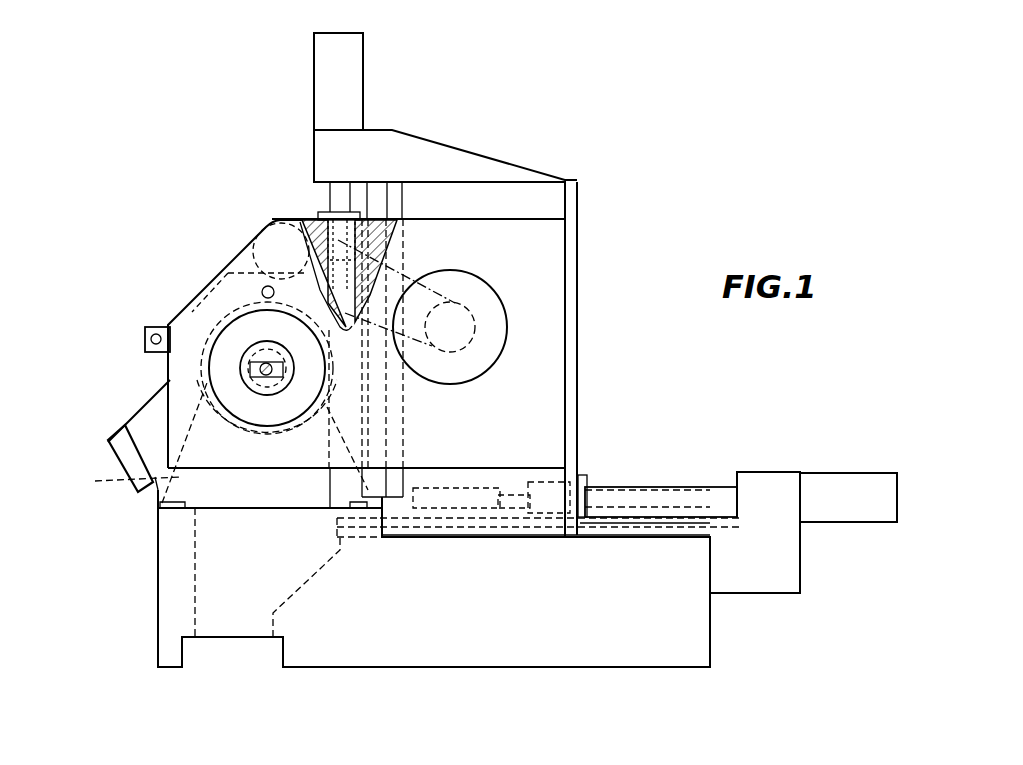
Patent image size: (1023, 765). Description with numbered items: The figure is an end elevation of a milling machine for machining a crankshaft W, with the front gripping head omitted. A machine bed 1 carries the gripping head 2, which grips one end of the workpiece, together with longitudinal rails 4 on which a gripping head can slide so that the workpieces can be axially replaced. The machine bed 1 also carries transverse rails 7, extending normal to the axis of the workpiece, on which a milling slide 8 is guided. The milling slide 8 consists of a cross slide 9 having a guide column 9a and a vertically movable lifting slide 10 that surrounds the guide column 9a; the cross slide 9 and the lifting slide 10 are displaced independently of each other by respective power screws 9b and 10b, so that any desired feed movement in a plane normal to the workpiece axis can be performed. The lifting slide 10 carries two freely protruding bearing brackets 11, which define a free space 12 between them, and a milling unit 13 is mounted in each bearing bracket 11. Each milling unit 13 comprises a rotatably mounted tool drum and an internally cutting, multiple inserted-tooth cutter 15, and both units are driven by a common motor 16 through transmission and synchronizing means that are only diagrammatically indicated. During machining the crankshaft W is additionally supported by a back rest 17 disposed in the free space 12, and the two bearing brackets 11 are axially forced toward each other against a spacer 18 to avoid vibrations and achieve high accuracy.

The machine bed 1 is at (690, 628).
The gripping head 2 is at (222, 441).
The longitudinal rails 4 is at (160, 512).
The transverse rails 7 is at (647, 520).
The milling slide 8 is at (552, 165).
The cross slide 9 is at (573, 403).
The guide column 9a is at (547, 205).
The power screw 9b is at (830, 490).
The lifting slide 10 is at (542, 280).
The power screw 10b is at (345, 72).
The bearing bracket 11 is at (215, 298).
The free space 12 is at (300, 222).
The milling unit 13 is at (210, 337).
The inserted-tooth cutter 15 is at (253, 327).
The motor 16 is at (487, 340).
The back rest 17 is at (150, 413).
The spacer 18 is at (145, 342).
The crankshaft W is at (253, 377).